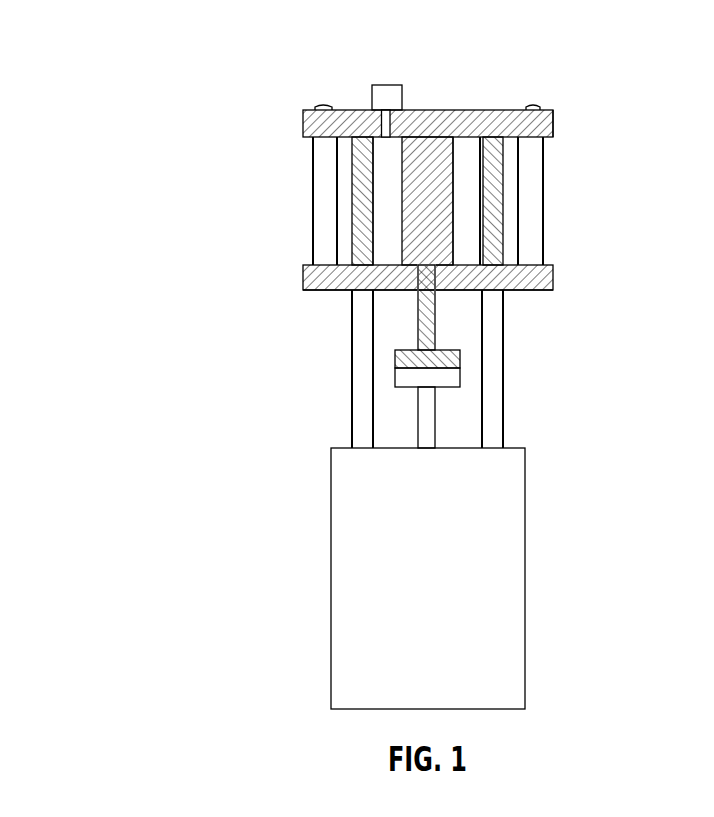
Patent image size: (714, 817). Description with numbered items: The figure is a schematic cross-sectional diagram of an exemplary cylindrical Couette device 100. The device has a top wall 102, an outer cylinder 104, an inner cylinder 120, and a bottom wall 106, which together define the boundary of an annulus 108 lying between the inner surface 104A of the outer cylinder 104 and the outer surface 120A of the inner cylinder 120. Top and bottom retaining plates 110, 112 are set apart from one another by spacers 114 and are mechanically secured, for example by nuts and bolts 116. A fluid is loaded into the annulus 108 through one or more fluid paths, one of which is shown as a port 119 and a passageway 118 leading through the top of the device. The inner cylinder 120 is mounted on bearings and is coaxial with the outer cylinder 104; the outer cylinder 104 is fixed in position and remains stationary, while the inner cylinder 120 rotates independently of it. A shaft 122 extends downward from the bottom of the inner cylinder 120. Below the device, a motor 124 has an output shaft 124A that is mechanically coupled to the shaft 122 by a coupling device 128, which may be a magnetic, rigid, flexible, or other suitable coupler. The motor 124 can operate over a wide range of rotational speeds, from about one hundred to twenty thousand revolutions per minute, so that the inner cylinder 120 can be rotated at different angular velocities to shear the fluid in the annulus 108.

The cylindrical Couette device 100 is at (178, 38).
The top wall 102 is at (412, 110).
The outer cylinder 104 is at (358, 164).
The inner surface of the outer cylinder 104A is at (376, 196).
The bottom wall 106 is at (381, 292).
The annulus 108 is at (470, 218).
The top retaining plate 110 is at (554, 125).
The bottom retaining plate 112 is at (555, 279).
The spacers 114 is at (326, 223).
The nuts and bolts 116 is at (531, 106).
The passageway 118 is at (383, 121).
The port 119 is at (386, 84).
The inner cylinder 120 is at (445, 158).
The outer surface of the inner cylinder 120A is at (455, 190).
The shaft 122 is at (430, 326).
The motor 124 is at (486, 587).
The output shaft 124A is at (430, 413).
The coupling device 128 is at (396, 368).